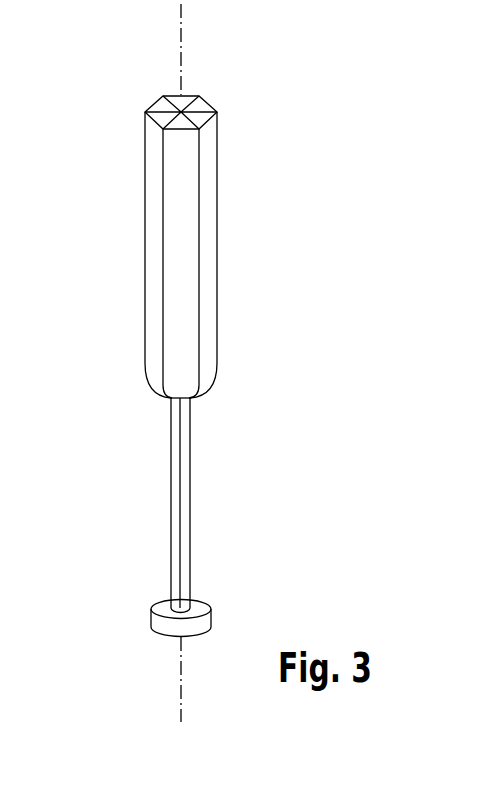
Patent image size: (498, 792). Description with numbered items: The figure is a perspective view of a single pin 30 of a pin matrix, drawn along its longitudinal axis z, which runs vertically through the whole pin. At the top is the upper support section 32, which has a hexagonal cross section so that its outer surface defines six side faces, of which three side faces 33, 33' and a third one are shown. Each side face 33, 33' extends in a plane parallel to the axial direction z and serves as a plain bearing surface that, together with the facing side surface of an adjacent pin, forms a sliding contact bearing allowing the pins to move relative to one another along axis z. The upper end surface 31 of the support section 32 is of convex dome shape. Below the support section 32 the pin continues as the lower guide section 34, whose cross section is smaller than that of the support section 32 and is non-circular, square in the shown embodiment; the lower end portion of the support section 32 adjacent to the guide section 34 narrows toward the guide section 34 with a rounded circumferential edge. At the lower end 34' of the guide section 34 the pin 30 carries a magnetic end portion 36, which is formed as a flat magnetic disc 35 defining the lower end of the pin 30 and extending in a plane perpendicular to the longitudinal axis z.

The longitudinal axis z is at (180, 24).
The pin 30 is at (248, 148).
The upper end surface 31 is at (181, 111).
The upper support section 32 is at (145, 236).
The side face 33 is at (123, 241).
The side face 33' is at (138, 263).
The lower guide section 34 is at (181, 505).
The lower end of the guide section 34' is at (238, 561).
The flat magnetic disc 35 is at (158, 638).
The magnetic end portion 36 is at (215, 618).